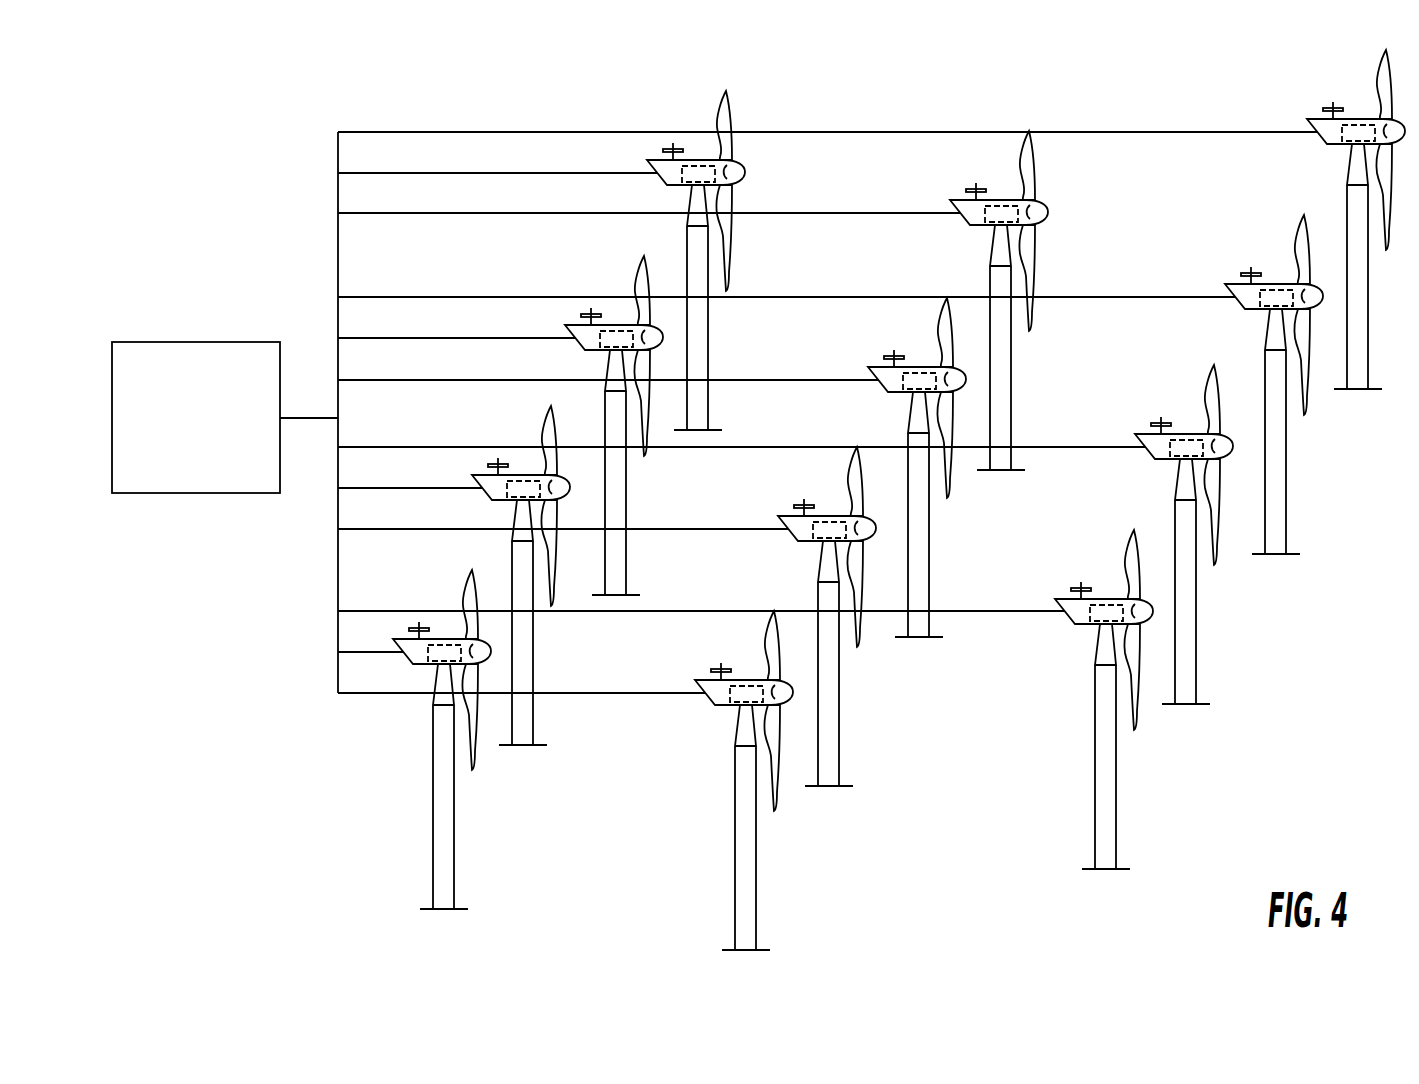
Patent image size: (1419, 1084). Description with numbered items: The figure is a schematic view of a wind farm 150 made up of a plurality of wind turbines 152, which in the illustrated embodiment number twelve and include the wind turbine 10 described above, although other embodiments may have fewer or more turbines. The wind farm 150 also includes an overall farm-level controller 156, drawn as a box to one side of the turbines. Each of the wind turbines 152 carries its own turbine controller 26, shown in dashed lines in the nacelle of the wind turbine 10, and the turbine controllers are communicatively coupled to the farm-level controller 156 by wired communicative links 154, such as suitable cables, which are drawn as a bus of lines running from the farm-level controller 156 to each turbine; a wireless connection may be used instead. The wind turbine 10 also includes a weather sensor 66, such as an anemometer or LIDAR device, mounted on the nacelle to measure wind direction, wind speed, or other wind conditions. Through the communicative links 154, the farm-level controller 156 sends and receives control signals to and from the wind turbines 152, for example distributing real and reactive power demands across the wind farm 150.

The wind farm 150 is at (195, 192).
The wind turbines 152 is at (832, 678).
The communicative links 154 is at (505, 297).
The farm-level controller 156 is at (210, 429).
The wind turbine 10 is at (401, 733).
The turbine controller 26 is at (447, 646).
The weather sensor 66 is at (722, 667).